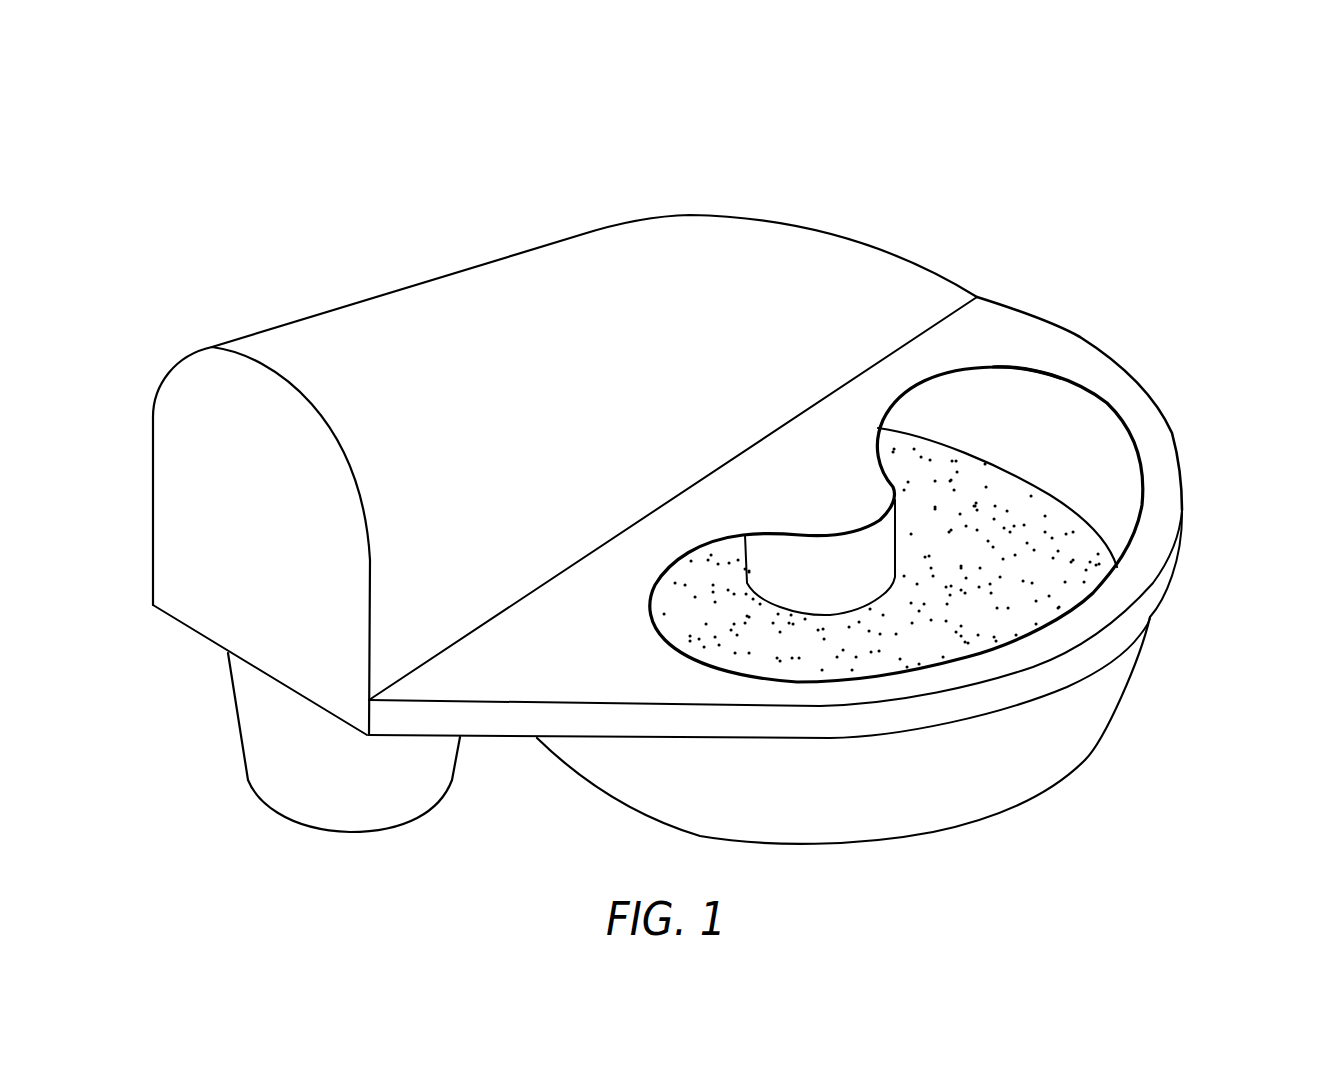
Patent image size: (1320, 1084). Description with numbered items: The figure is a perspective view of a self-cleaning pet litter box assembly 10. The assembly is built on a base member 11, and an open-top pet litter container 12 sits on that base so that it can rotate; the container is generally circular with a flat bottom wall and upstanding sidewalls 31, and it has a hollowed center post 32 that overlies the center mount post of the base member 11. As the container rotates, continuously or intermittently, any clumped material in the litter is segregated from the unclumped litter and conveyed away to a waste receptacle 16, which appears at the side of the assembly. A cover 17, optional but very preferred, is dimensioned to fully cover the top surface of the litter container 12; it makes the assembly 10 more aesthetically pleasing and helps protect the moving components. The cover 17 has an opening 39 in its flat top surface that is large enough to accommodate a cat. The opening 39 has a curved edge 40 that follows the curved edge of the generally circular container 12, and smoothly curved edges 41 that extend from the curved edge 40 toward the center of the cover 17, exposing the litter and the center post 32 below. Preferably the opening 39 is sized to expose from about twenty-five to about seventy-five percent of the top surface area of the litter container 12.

The self-cleaning pet litter box assembly 10 is at (1198, 212).
The base member 11 is at (867, 833).
The open-top pet litter container 12 is at (949, 507).
The waste receptacle 16 is at (287, 812).
The cover 17 is at (752, 230).
The upstanding sidewalls 31 is at (1102, 443).
The hollowed center post 32 is at (854, 586).
The opening 39 is at (1133, 432).
The curved edge 40 is at (1145, 490).
The smoothly curved edges 41 is at (1040, 370).